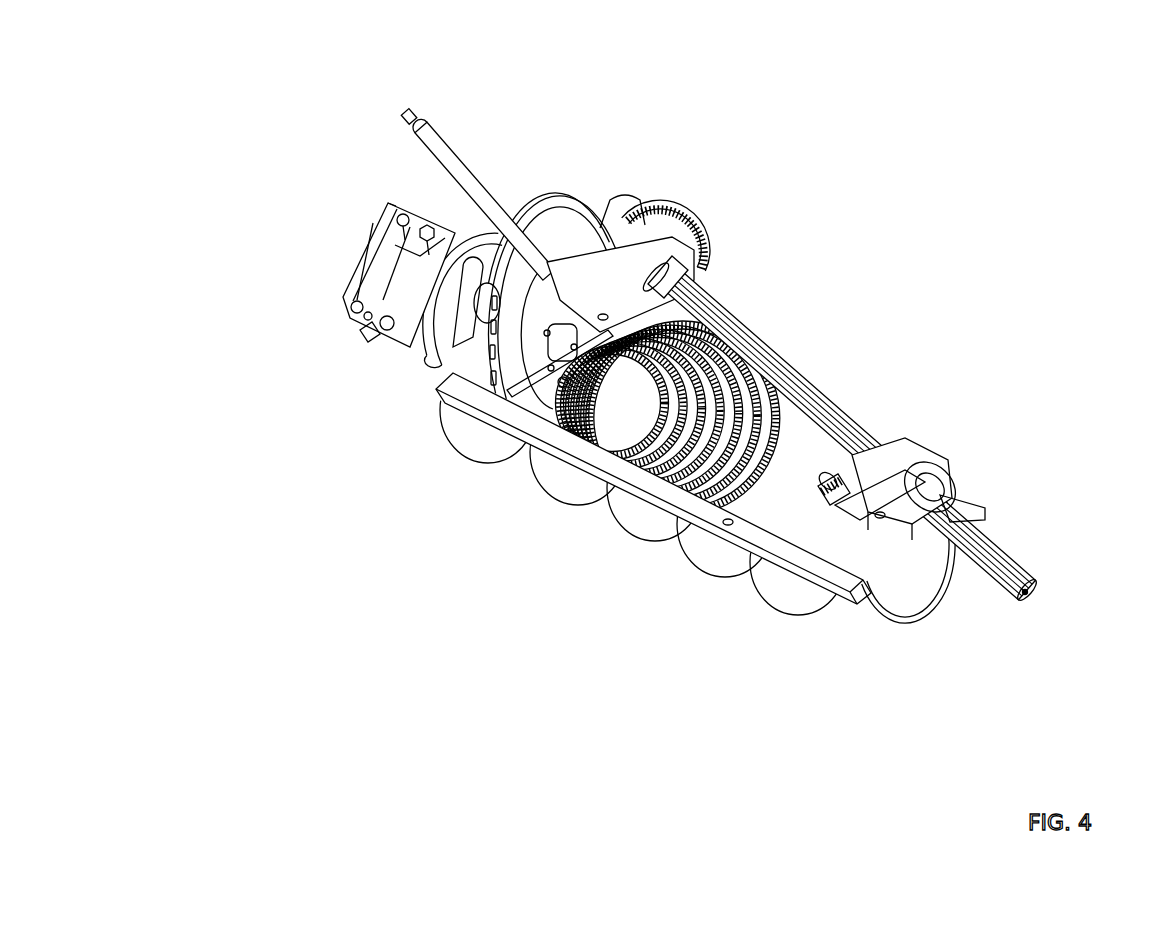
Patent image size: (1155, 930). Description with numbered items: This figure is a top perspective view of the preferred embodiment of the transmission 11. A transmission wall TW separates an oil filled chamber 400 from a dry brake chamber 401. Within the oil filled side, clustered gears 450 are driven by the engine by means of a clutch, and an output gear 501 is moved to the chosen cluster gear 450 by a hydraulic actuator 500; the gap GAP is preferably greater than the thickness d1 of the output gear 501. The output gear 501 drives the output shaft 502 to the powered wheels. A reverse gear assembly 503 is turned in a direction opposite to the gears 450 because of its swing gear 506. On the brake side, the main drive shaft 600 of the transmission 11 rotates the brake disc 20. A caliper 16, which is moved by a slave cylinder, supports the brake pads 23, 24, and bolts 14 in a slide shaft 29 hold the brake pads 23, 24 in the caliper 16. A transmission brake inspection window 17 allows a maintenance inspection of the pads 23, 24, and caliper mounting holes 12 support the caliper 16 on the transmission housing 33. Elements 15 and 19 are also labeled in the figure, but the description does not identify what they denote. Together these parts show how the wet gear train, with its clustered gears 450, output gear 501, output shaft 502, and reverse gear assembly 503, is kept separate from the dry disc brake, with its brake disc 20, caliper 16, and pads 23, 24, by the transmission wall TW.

The transmission 11 is at (950, 410).
The caliper mounting holes 12 is at (455, 343).
The bolts 14 is at (362, 333).
The bolt 15 is at (343, 312).
The caliper 16 is at (340, 272).
The transmission brake inspection window 17 is at (402, 270).
The pointer bar 19 is at (530, 391).
The brake disc 20 is at (492, 384).
The brake pad 23 is at (430, 362).
The brake pad 24 is at (412, 343).
The slide shaft 29 is at (352, 322).
The transmission housing 33 is at (472, 348).
The oil filled chamber 400 is at (718, 520).
The dry brake chamber 401 is at (518, 110).
The clustered gears 450 is at (722, 370).
The hydraulic actuator 500 is at (424, 133).
The output gear 501 is at (700, 210).
The output shaft 502 is at (1037, 590).
The reverse gear assembly 503 is at (847, 483).
The swing gear 506 is at (827, 540).
The main drive shaft 600 is at (557, 352).
The transmission wall TW is at (563, 382).
The gap GAP is at (695, 277).
The thickness of the output gear d1 is at (683, 227).